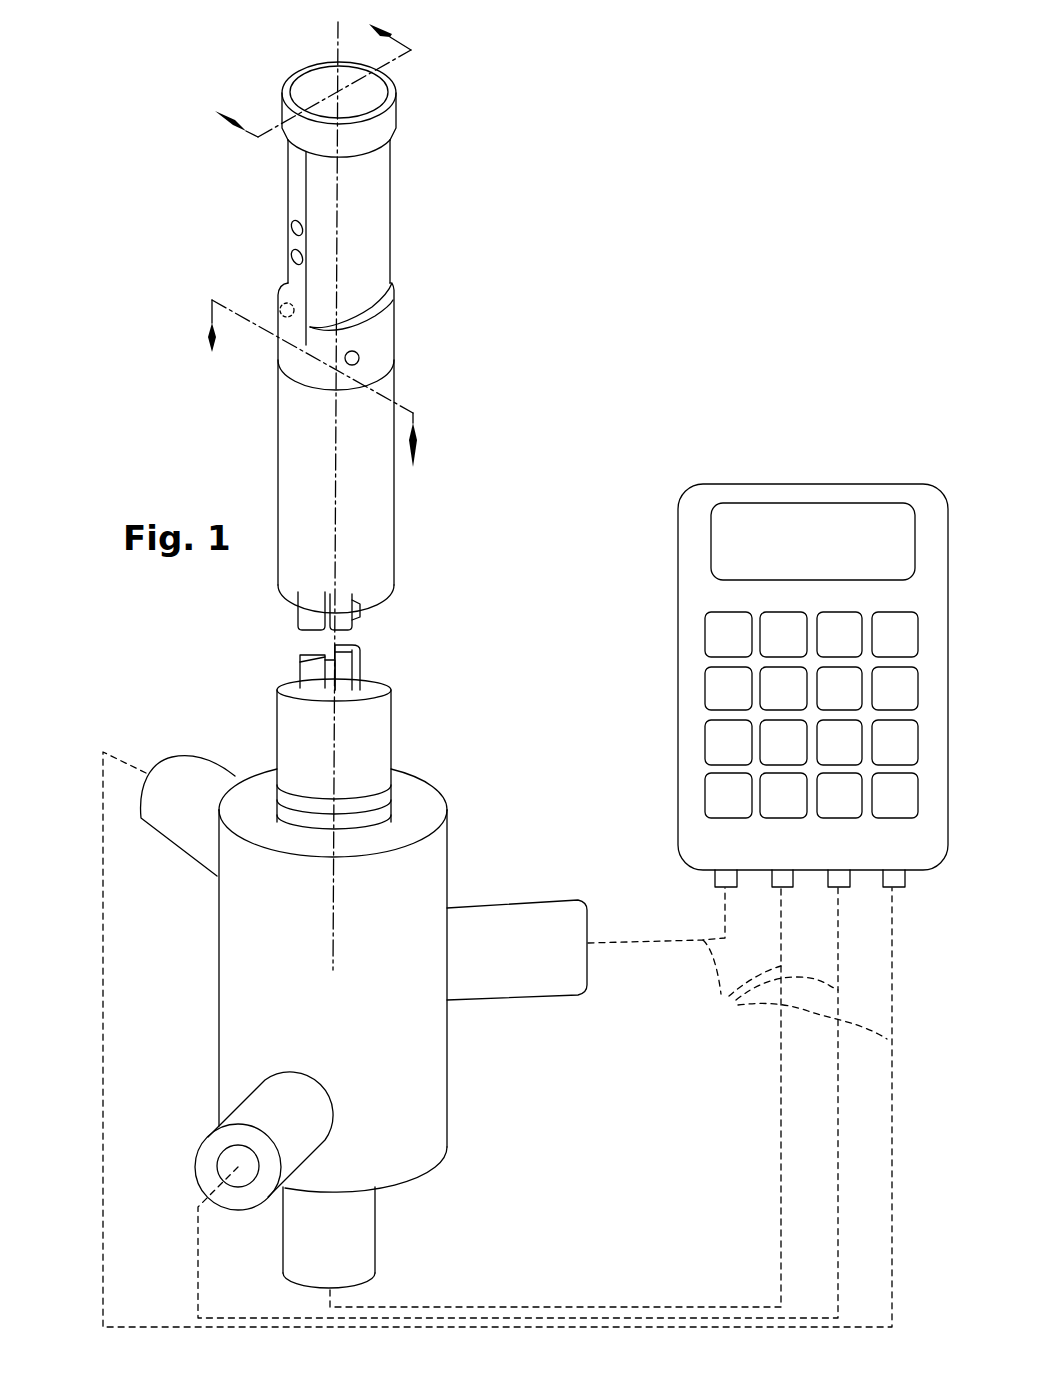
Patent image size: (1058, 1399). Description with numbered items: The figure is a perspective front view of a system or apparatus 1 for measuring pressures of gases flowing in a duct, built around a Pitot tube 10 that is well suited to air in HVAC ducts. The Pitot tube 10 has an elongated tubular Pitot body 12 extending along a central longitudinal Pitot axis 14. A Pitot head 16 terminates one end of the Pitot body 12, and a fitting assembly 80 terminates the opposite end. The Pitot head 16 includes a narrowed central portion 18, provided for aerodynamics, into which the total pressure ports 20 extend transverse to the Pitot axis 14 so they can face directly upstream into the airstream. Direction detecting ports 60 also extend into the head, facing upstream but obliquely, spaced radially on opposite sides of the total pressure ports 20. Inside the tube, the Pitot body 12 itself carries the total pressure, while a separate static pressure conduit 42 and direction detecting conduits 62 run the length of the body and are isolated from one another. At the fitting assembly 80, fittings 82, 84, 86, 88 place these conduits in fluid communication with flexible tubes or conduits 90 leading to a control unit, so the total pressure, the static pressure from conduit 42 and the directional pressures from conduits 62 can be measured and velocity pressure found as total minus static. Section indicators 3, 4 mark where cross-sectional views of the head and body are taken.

The system or apparatus 1 is at (130, 158).
The Pitot tube 10 is at (210, 80).
The Pitot body 12 is at (370, 547).
The Pitot axis 14 is at (337, 32).
The Pitot head 16 is at (316, 80).
The narrowed central portion 18 is at (363, 205).
The total pressure port 20 is at (292, 257).
The static pressure conduit 42 is at (357, 654).
The direction detecting ports 60 is at (358, 361).
The direction detecting conduits 62 is at (335, 675).
The fitting assembly 80 is at (427, 857).
The fitting 82 is at (347, 1240).
The fitting 84 is at (522, 917).
The fitting 86 is at (197, 773).
The fitting 88 is at (253, 1105).
The flexible tubes or conduits 90 is at (793, 989).
The section line 3- 3 is at (303, 72).
The section line 4- 4 is at (312, 399).